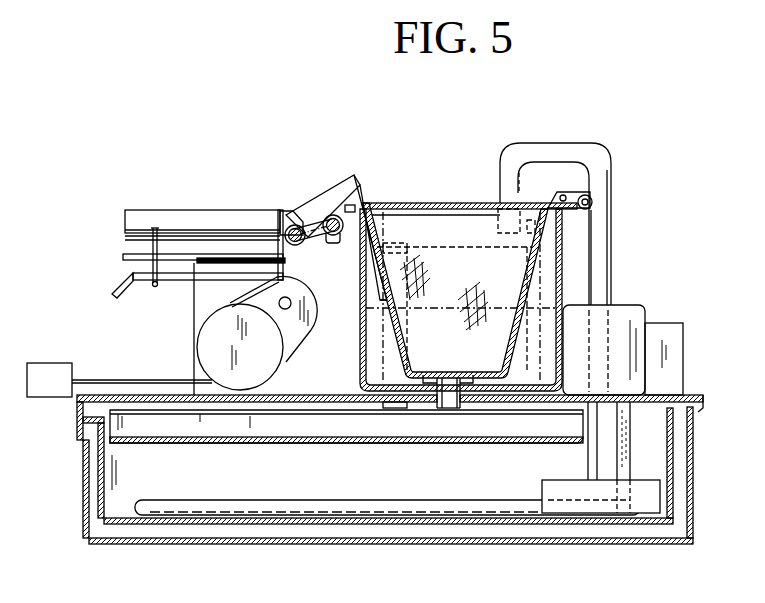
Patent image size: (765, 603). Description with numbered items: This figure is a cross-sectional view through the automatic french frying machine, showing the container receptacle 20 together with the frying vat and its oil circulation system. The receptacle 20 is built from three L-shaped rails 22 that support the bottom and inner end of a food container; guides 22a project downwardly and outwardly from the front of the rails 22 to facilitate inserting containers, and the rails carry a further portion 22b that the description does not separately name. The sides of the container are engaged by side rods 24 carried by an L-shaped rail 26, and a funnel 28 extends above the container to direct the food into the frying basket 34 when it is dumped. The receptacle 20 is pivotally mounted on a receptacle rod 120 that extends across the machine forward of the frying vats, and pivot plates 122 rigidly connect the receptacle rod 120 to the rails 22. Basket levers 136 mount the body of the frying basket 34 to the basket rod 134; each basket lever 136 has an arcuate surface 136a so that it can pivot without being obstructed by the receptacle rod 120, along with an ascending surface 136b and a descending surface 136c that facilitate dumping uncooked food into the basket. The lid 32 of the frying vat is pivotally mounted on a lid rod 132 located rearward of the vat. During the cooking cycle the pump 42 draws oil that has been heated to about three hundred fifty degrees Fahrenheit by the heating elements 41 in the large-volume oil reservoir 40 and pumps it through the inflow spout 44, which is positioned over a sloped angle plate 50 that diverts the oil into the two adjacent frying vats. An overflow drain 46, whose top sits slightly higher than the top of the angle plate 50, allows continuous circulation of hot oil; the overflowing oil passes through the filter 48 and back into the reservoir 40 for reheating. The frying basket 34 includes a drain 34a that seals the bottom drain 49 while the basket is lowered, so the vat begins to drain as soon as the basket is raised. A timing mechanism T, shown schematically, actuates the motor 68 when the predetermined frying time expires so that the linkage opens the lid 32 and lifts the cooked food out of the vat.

The container receptacle 20 is at (165, 282).
The L-shaped rails 22 is at (178, 282).
The guides 22a is at (113, 288).
The frame bracket 22b is at (276, 208).
The side rods 24 is at (185, 255).
The L-shaped rail 26 is at (147, 247).
The funnel 28 is at (143, 212).
The lid 32 is at (455, 203).
The frying basket 34 is at (518, 338).
The drain 34a is at (487, 373).
The oil reservoir 40 is at (123, 507).
The heating elements 41 is at (258, 505).
The pump 42 is at (652, 502).
The inflow spout 44 is at (537, 150).
The overflow drain 46 is at (383, 393).
The filter 48 is at (230, 435).
The bottom drain 49 is at (450, 398).
The sloped angle plate 50 is at (552, 277).
The motor 68 is at (212, 352).
The receptacle rod 120 is at (347, 242).
The pivot plates 122 is at (297, 210).
The lid rod 132 is at (593, 200).
The basket rod 134 is at (285, 233).
The basket levers 136 is at (357, 178).
The arcuate surface 136a is at (330, 236).
The ascending surface 136b is at (353, 178).
The descending surface 136c is at (365, 198).
The timing mechanism T is at (53, 363).